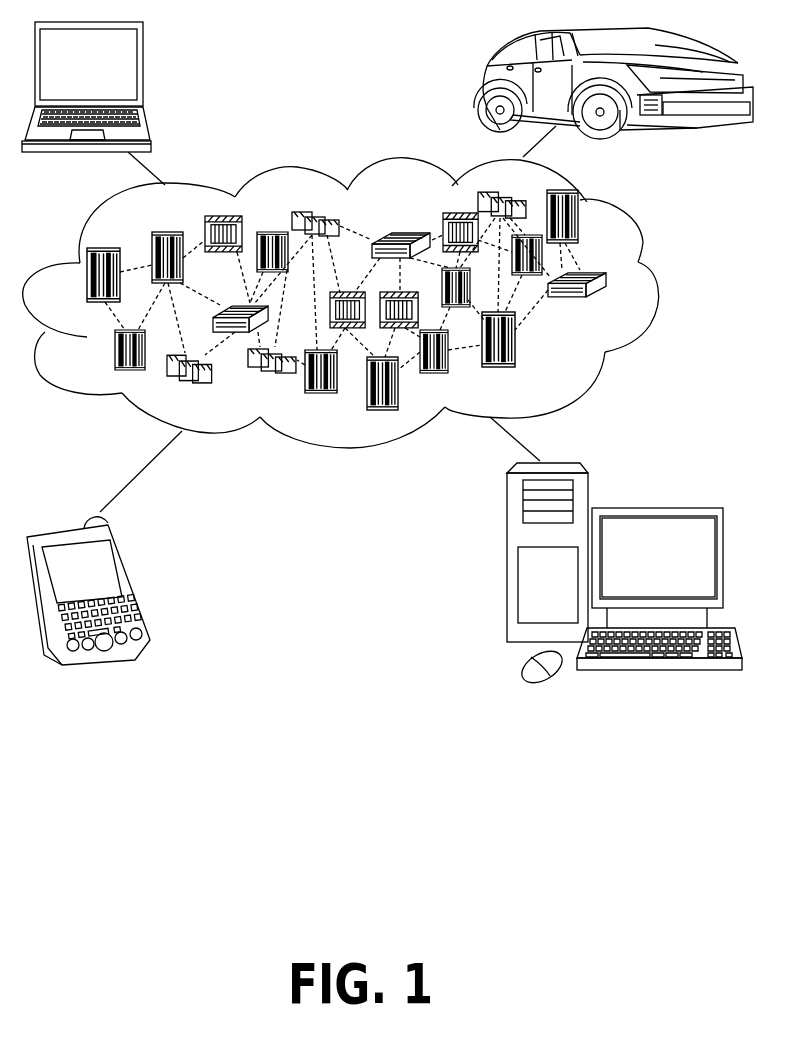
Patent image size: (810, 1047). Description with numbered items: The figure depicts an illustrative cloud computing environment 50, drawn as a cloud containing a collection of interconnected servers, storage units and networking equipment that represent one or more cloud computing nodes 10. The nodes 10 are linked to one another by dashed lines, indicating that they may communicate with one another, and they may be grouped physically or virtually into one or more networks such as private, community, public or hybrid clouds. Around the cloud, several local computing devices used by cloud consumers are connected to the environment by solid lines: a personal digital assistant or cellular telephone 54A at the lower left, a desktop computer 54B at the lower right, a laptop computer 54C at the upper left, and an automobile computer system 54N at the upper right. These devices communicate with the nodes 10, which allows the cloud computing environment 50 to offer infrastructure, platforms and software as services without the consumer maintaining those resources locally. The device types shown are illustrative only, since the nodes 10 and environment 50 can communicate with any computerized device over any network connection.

The cloud computing nodes 10 is at (613, 308).
The cloud computing environment 50 is at (655, 282).
The personal digital assistant or cellular telephone 54A is at (135, 583).
The desktop computer 54B is at (653, 507).
The laptop computer 54C is at (143, 70).
The automobile computer system 54N is at (484, 84).